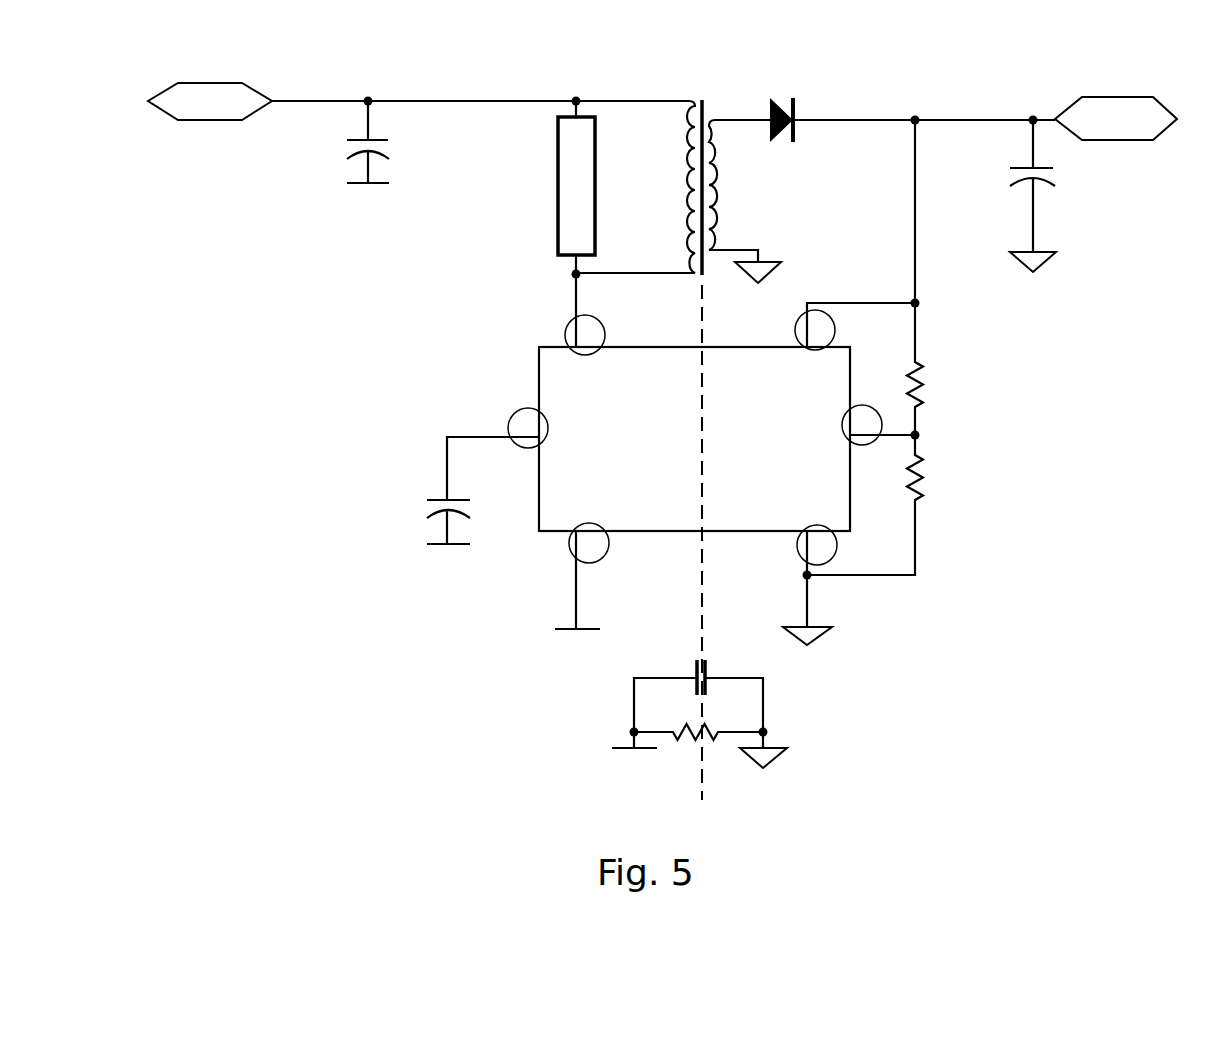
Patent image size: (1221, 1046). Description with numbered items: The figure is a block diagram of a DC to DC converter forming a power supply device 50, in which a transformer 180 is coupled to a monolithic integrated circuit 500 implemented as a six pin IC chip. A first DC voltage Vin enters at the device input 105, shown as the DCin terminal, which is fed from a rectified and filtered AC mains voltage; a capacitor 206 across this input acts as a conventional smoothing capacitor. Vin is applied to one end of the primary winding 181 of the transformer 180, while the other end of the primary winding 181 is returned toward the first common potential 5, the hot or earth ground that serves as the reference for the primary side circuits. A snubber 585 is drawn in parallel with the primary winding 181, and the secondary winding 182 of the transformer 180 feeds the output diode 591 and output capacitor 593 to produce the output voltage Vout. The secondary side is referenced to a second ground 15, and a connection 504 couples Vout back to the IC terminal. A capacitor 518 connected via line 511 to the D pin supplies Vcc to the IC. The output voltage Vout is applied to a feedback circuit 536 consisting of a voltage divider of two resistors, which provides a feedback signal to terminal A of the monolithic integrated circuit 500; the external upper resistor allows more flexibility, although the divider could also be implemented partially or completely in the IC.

The power supply device 50 is at (1107, 715).
The device input 105 is at (211, 83).
The capacitor 206 is at (347, 140).
The snubber 585 is at (558, 235).
The transformer 180 is at (688, 160).
The primary winding 181 is at (688, 118).
The secondary winding 182 is at (725, 165).
The output diode D11 591 is at (797, 108).
The output capacitor C11 593 is at (1022, 168).
The secondary voltage sense connection 504 is at (915, 222).
The monolithic integrated circuit 500 is at (548, 316).
The bypass pin connection 511 is at (460, 437).
The bypass capacitor C3 518 is at (436, 500).
The first common potential 5 is at (573, 628).
The secondary ground 15 is at (802, 642).
The feedback circuit 536 is at (967, 440).